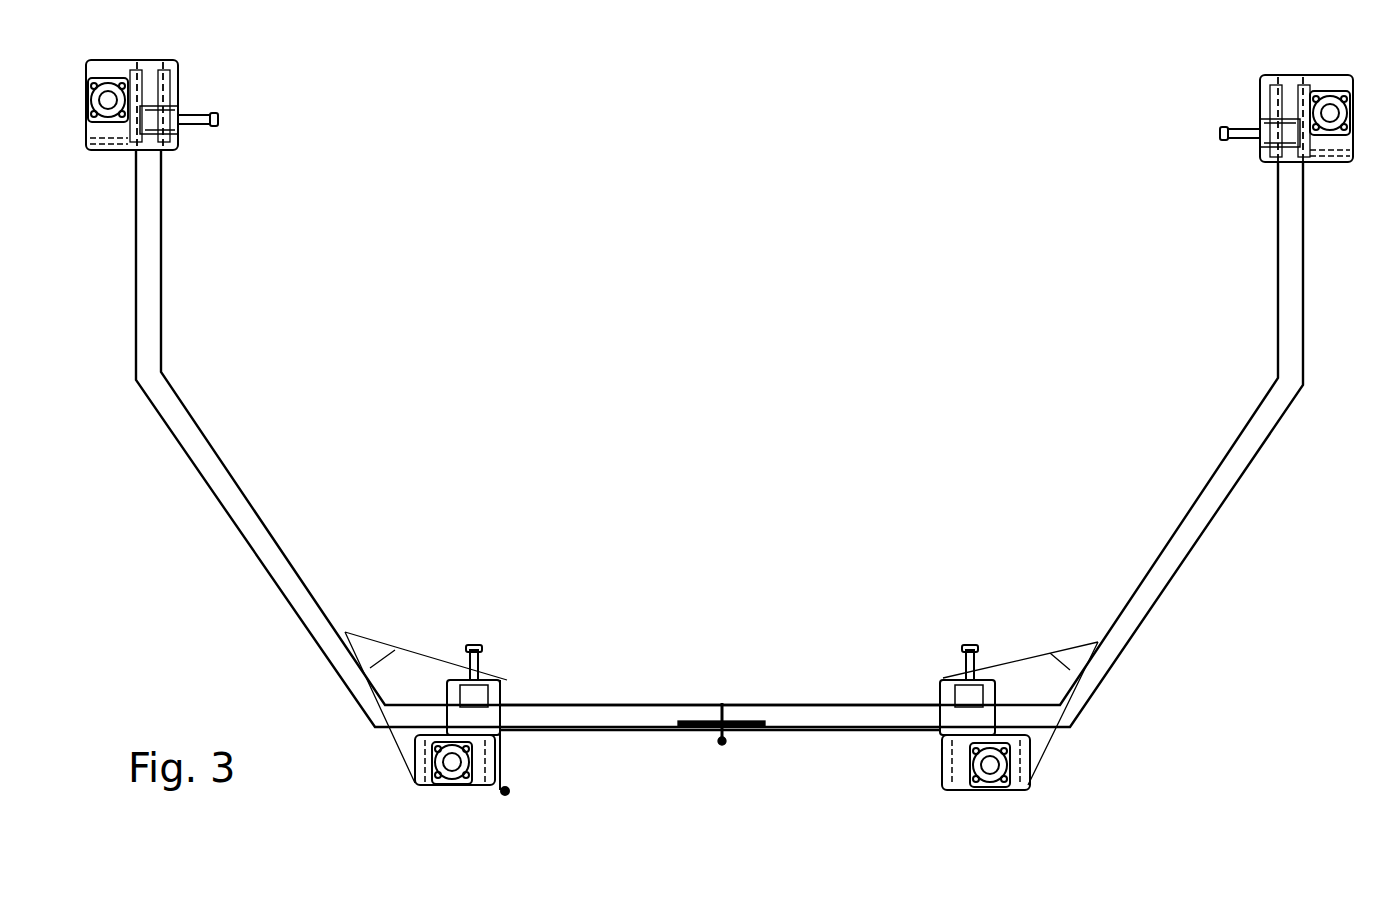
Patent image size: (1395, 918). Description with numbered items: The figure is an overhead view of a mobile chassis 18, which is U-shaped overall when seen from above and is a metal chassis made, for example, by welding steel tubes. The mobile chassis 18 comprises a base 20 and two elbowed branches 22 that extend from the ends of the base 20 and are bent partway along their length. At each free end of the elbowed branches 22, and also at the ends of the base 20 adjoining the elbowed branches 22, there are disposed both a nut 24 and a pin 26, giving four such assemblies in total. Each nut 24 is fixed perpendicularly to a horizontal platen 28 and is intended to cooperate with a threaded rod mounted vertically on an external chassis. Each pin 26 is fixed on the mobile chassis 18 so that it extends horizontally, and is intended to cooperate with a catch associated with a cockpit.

The mobile chassis 18 is at (195, 582).
The base 20 is at (635, 730).
The elbowed branches 22 is at (240, 495).
The nut 24 is at (96, 132).
The pin 26 is at (205, 117).
The horizontal platen 28 is at (121, 150).